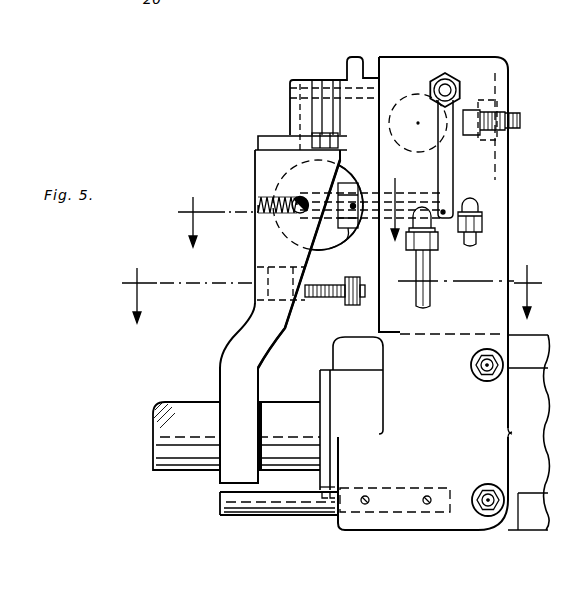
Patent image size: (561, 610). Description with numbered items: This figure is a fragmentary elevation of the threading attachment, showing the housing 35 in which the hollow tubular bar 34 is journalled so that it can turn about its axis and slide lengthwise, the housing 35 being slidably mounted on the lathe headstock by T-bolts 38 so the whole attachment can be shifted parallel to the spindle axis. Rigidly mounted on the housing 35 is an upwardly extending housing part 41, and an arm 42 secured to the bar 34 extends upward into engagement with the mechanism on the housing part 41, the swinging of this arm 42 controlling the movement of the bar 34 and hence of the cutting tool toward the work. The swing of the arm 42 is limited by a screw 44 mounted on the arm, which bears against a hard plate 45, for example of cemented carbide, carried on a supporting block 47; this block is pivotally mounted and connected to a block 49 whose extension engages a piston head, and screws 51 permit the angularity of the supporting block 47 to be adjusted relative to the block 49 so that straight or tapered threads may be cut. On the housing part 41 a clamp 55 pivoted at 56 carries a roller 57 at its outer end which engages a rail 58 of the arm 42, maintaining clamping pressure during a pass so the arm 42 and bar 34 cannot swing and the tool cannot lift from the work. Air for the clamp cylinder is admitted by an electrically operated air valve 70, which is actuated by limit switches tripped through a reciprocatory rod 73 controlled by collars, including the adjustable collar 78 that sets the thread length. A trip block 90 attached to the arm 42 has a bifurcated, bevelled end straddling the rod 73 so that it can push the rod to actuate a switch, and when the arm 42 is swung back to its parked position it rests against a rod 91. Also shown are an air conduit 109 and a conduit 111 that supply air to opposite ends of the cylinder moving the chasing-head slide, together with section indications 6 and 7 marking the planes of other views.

The bar 34 is at (182, 402).
The housing 35 is at (523, 408).
The T-bolts 38 is at (470, 375).
The housing part 41 is at (351, 48).
The arm 42 is at (256, 366).
The screw 44 is at (298, 198).
The hard plate 45 is at (330, 180).
The supporting block 47 is at (366, 181).
The block 49 is at (282, 240).
The screws 51 is at (370, 220).
The clamp 55 is at (335, 80).
The pivot 56 is at (300, 80).
The roller 57 is at (338, 142).
The rail 58 is at (272, 138).
The air valve 70 is at (406, 94).
The reciprocatory rod 73 is at (320, 297).
The collar 78 is at (352, 292).
The trip block 90 is at (257, 278).
The rod 91 is at (222, 498).
The air conduit 109 is at (468, 246).
The conduit 111 is at (431, 306).
The section line 6- 6 is at (330, 293).
The section line 7- 7 is at (280, 205).